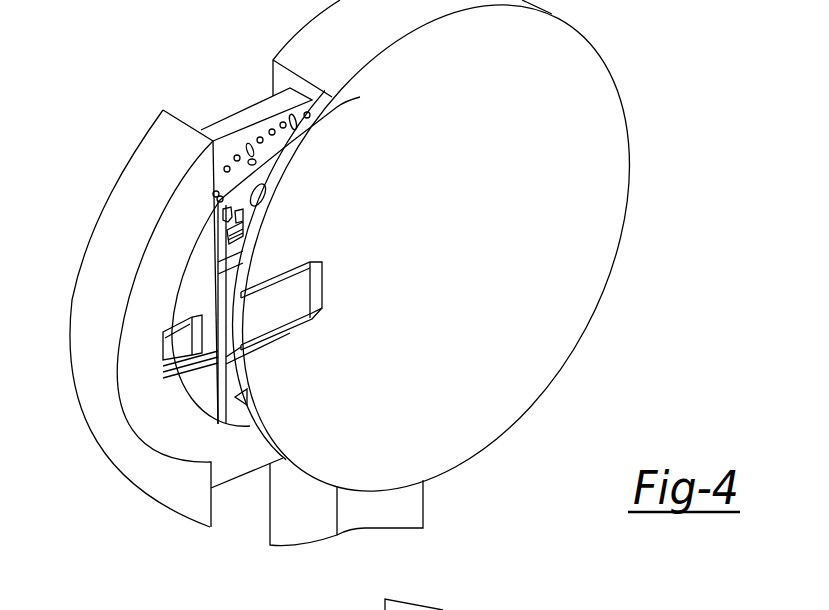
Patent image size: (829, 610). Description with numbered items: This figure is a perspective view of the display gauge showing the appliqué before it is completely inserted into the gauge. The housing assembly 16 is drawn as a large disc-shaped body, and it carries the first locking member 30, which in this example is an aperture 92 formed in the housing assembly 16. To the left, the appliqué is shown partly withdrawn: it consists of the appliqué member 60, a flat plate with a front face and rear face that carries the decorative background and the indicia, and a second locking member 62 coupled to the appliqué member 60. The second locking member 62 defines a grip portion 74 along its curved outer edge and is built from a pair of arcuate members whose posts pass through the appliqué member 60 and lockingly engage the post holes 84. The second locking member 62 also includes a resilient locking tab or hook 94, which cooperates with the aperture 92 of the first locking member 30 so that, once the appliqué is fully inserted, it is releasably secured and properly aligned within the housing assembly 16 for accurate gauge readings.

The housing assembly 16 is at (517, 391).
The first locking member 30 is at (301, 259).
The appliqué member 60 is at (241, 133).
The second locking member 62 is at (93, 270).
The grip portion 74 is at (80, 388).
The post holes 84 is at (185, 356).
The aperture 92 is at (313, 312).
The resilient locking tab or hook 94 is at (177, 350).